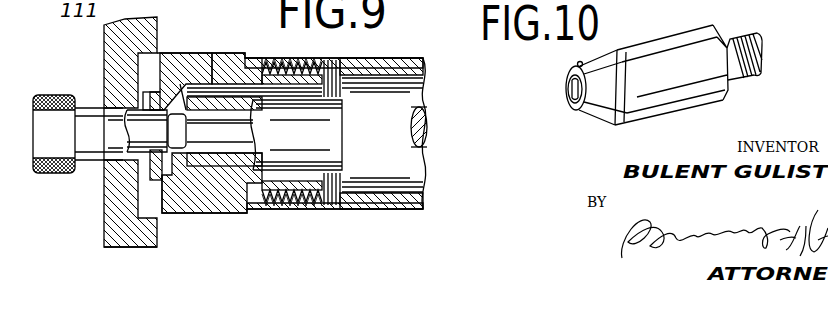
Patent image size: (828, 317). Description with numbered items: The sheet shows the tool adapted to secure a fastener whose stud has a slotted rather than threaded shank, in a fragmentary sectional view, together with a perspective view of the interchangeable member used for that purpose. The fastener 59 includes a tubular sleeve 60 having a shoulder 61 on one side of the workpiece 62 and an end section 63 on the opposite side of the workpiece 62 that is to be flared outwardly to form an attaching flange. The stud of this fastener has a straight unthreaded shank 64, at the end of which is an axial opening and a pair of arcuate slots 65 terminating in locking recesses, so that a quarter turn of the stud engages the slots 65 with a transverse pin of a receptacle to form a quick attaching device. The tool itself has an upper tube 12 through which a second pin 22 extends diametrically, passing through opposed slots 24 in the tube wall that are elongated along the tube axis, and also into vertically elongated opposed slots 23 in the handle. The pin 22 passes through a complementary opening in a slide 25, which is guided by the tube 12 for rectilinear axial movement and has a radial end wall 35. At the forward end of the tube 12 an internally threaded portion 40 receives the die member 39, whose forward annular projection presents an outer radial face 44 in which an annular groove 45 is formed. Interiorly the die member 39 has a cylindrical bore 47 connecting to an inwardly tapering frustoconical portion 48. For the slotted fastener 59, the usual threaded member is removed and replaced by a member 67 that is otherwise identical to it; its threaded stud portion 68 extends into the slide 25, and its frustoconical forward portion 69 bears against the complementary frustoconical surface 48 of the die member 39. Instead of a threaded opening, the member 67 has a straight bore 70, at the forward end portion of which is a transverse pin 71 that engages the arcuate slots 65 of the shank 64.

In FIG. 9, the upper tube 12 is at (428, 206).
In FIG. 9, the second pin 22 is at (427, 135).
In FIG. 9, the vertically elongated opposed slots 23 is at (428, 110).
In FIG. 9, the opposed slots 24 is at (430, 147).
In FIG. 9, the slide 25 is at (418, 100).
In FIG. 9, the radial end wall 35 is at (333, 195).
In FIG. 9, the die member 39 is at (193, 217).
In FIG. 9, the internally threaded portion 40 is at (277, 212).
In FIG. 9, the outer radial face 44 is at (140, 186).
In FIG. 9, the annular groove 45 is at (150, 160).
In FIG. 9, the cylindrical bore 47 is at (293, 88).
In FIG. 9, the frustoconical portion 48 is at (206, 98).
In FIG. 9, the fastener 59 is at (48, 182).
In FIG. 9, the tubular sleeve 60 is at (92, 107).
In FIG. 9, the shoulder 61 is at (110, 146).
In FIG. 9, the workpiece 62 is at (127, 242).
In FIG. 9, the end section 63 is at (152, 110).
In FIG. 9, the straight unthreaded shank 64 is at (146, 131).
In FIG. 9, the arcuate slots 65 is at (186, 146).
In FIG. 9, the member 67 is at (302, 173).
In FIG. 10, the member 67 is at (658, 35).
In FIG. 10, the threaded stud portion 68 is at (736, 38).
In FIG. 10, the frustoconical forward portion 69 is at (585, 112).
In FIG. 9, the straight bore 70 is at (245, 150).
In FIG. 10, the straight bore 70 is at (566, 90).
In FIG. 9, the transverse pin 71 is at (184, 110).
In FIG. 10, the transverse pin 71 is at (571, 95).